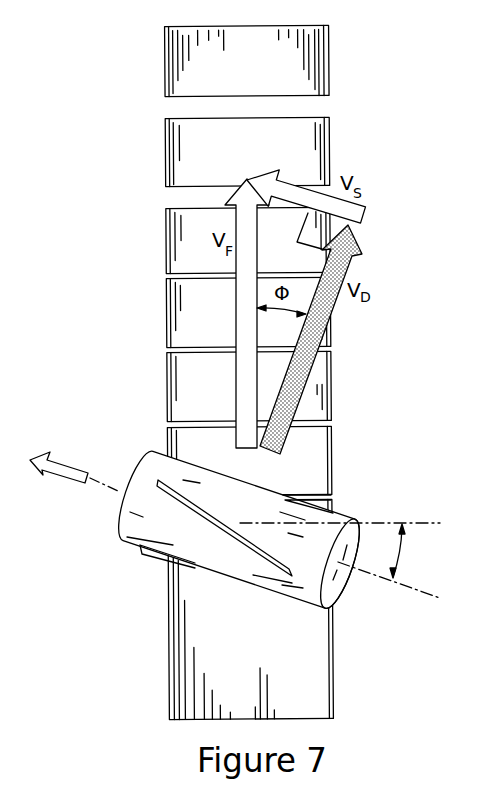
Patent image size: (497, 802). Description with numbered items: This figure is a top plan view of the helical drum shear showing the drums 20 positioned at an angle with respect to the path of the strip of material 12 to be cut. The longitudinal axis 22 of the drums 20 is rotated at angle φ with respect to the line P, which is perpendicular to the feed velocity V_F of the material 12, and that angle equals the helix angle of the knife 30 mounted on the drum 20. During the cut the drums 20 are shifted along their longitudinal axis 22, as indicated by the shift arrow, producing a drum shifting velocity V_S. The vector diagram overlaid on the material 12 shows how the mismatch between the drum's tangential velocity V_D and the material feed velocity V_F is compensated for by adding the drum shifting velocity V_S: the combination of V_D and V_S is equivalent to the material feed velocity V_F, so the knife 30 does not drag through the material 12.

The material 12 is at (308, 685).
The drums 20 is at (117, 528).
The longitudinal axis 22 is at (356, 564).
The knife 30 is at (330, 513).